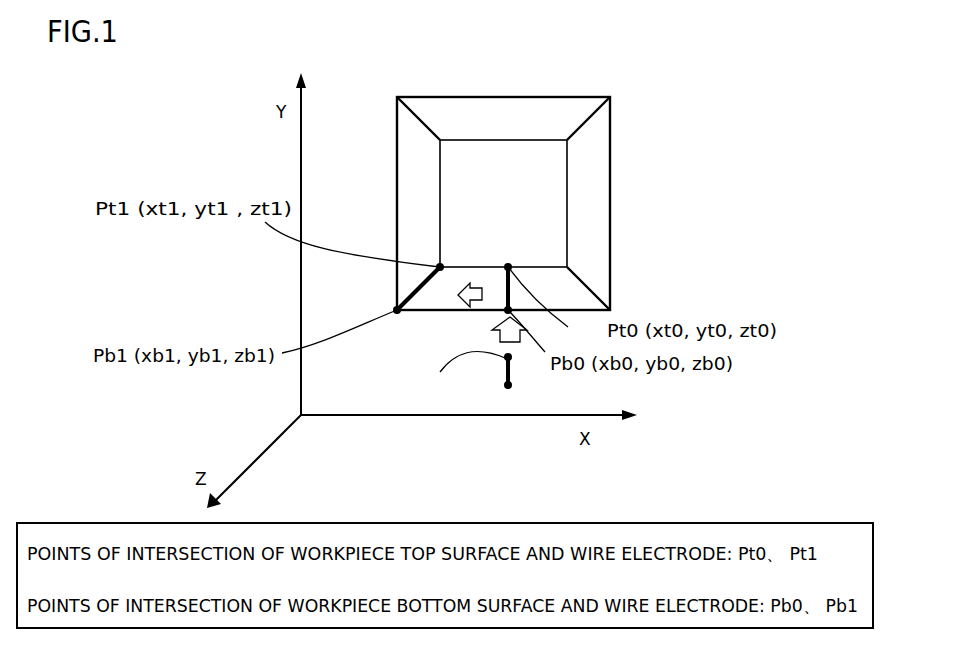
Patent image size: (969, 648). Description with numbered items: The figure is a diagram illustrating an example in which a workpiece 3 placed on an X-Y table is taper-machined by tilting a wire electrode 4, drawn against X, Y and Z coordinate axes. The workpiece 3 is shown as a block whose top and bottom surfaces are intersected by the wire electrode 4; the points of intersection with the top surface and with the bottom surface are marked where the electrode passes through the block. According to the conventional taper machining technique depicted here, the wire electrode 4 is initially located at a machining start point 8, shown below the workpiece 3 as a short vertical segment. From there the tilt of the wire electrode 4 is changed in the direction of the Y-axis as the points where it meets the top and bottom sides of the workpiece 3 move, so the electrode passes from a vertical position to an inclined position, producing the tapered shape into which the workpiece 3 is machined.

The workpiece 3 is at (492, 108).
The wire electrode 4 is at (503, 290).
The machining start point 8 is at (510, 386).